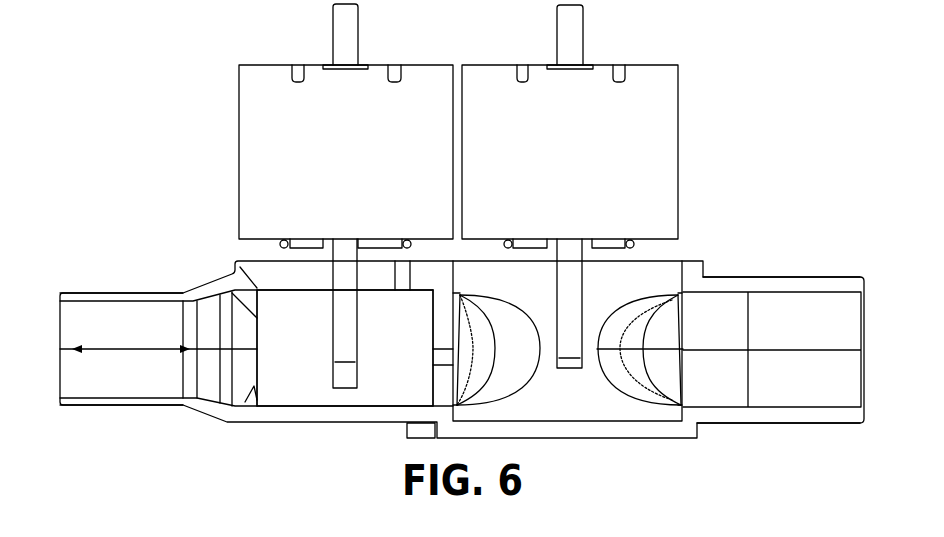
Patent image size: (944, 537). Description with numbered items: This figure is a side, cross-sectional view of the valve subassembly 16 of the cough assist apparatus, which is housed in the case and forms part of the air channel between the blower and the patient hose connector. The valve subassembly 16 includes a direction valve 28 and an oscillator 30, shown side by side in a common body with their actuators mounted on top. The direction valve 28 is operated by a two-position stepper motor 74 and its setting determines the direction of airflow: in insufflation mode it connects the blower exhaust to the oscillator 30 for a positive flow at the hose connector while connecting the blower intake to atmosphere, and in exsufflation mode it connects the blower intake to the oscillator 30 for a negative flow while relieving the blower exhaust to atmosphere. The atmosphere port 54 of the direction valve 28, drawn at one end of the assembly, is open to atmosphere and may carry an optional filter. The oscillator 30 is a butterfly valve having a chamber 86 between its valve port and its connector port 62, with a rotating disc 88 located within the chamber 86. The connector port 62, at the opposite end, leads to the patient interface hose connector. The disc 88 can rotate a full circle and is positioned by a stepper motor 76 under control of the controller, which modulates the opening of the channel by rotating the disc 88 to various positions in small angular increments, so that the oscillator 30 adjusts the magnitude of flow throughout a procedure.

The valve subassembly 16 is at (462, 239).
The direction valve 28 is at (684, 257).
The oscillator 30 is at (229, 266).
The atmosphere port 54 is at (787, 277).
The connector port 62 is at (137, 293).
The two-position stepper motor 74 is at (679, 123).
The stepper motor 76 is at (238, 113).
The chamber 86 is at (303, 396).
The rotating disc 88 is at (353, 342).